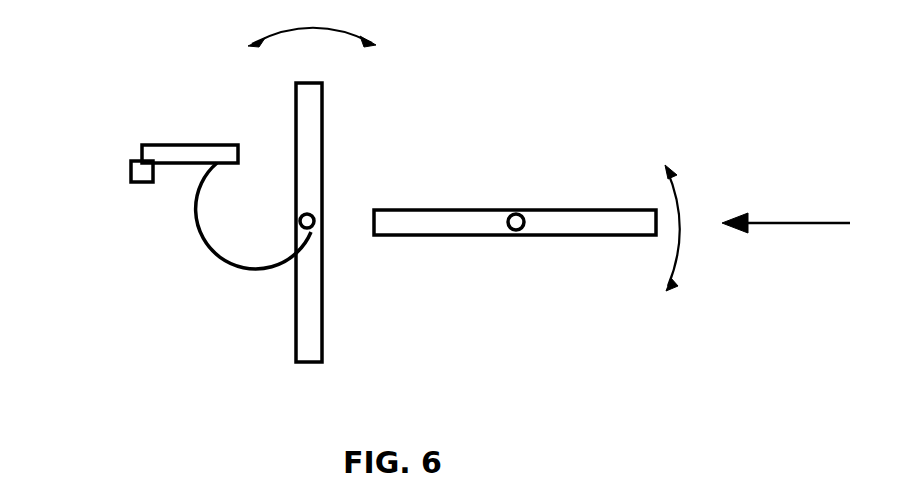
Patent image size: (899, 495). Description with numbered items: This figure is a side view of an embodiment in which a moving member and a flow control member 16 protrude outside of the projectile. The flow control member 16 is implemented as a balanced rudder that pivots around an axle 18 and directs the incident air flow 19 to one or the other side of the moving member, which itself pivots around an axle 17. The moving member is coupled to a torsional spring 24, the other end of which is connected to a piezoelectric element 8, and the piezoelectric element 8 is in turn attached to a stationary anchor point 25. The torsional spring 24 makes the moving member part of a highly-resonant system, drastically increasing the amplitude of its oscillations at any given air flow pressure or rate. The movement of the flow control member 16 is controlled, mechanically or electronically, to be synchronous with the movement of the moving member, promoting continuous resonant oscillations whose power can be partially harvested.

The piezoelectric element 8 is at (142, 152).
The stationary anchor point 25 is at (131, 168).
The torsional spring 24 is at (193, 220).
The axle 17 is at (297, 222).
The flow control member 16 is at (630, 218).
The axle 18 is at (513, 237).
The incident air flow 19 is at (786, 210).